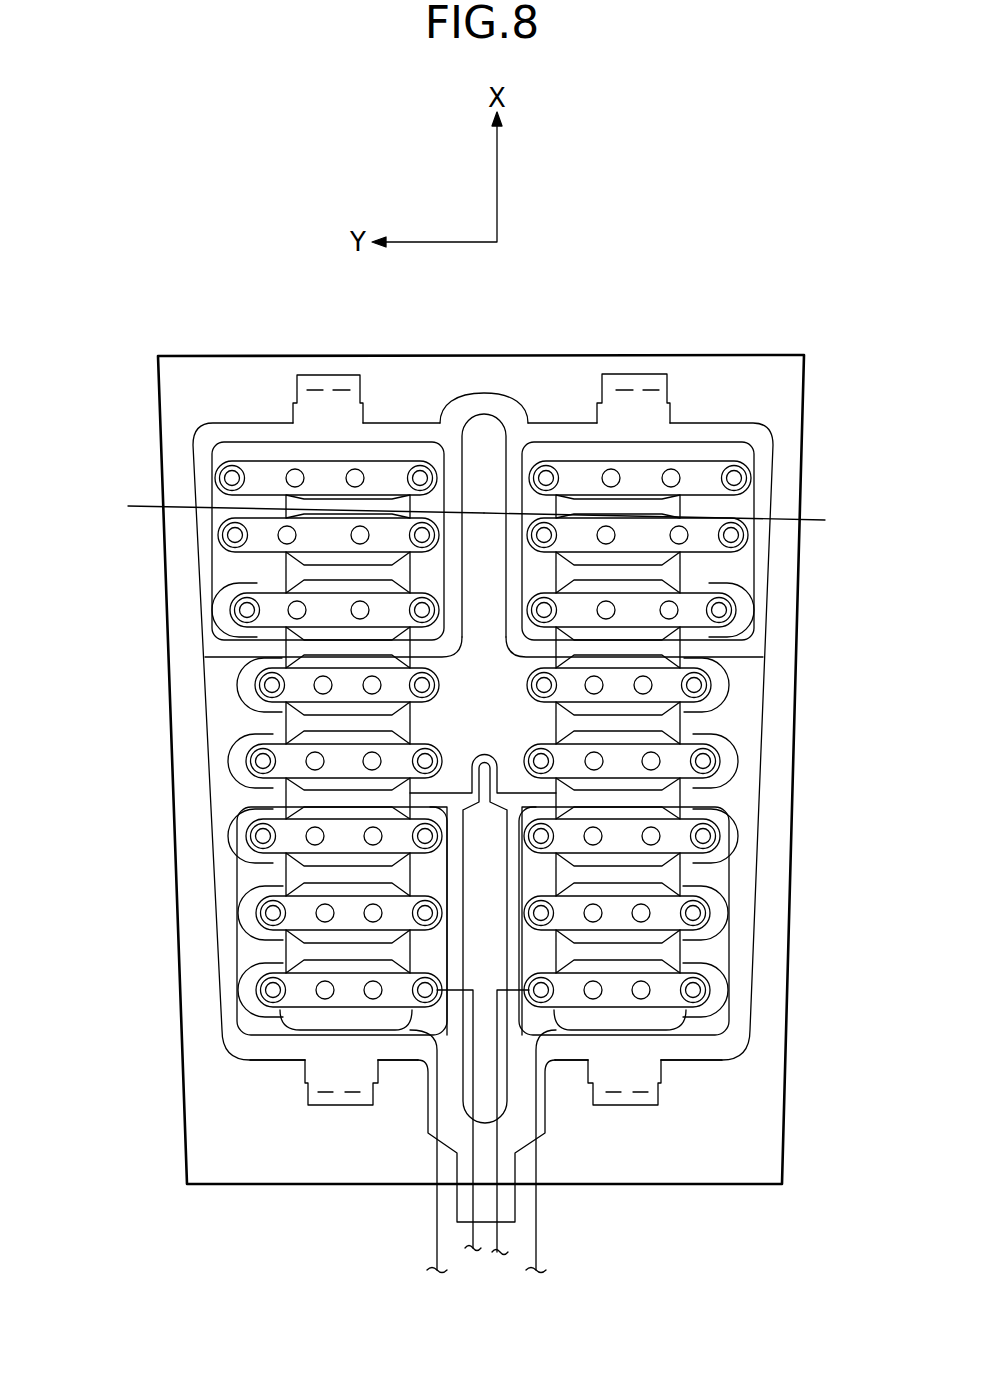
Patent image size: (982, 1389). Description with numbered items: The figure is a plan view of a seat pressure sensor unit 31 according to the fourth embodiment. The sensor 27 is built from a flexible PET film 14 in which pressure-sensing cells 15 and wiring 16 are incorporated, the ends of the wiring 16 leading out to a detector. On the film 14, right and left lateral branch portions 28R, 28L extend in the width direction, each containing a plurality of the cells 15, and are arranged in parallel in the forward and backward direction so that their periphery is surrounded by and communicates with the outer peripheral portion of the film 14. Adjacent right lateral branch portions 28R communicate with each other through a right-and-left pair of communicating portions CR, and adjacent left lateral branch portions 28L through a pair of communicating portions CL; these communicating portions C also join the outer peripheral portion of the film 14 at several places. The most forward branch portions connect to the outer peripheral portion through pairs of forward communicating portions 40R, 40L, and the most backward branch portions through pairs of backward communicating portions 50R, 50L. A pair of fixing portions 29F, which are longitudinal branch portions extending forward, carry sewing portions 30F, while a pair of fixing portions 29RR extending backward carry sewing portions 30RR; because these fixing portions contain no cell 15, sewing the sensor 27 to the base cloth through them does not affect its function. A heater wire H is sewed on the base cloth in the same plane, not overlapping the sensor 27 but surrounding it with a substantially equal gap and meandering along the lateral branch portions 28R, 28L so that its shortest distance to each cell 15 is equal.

The pressure sensor unit 31 is at (236, 350).
The sensor 27 is at (192, 581).
The lateral branch portion 28L is at (308, 465).
The lateral branch portion 28R is at (707, 488).
The fixing portion 29F is at (362, 385).
The sewing portion 30F is at (338, 381).
The fixing portion 29RR is at (312, 1075).
The sewing portion 30RR is at (327, 1107).
The forward communicating portion 40L is at (237, 452).
The forward communicating portion 40R is at (560, 440).
The backward communicating portion 50L is at (282, 1025).
The backward communicating portion 50R is at (688, 1022).
The cell 15 is at (733, 472).
The communicating portion C is at (453, 647).
The communicating portion CL is at (286, 505).
The communicating portion CR is at (676, 527).
The heater wire H is at (437, 1218).
The film 14 is at (490, 1223).
The wiring 16 is at (500, 1254).